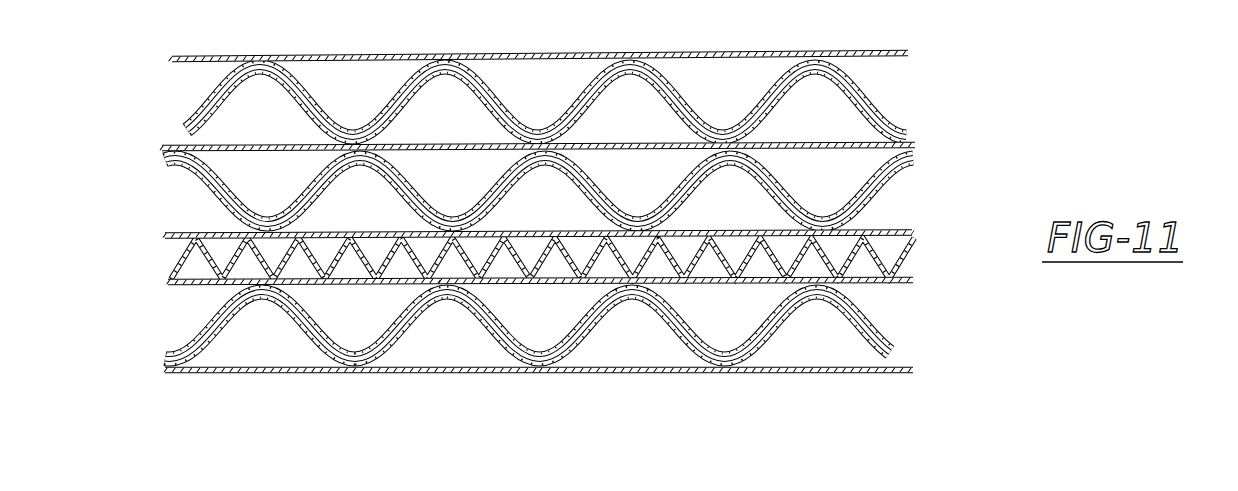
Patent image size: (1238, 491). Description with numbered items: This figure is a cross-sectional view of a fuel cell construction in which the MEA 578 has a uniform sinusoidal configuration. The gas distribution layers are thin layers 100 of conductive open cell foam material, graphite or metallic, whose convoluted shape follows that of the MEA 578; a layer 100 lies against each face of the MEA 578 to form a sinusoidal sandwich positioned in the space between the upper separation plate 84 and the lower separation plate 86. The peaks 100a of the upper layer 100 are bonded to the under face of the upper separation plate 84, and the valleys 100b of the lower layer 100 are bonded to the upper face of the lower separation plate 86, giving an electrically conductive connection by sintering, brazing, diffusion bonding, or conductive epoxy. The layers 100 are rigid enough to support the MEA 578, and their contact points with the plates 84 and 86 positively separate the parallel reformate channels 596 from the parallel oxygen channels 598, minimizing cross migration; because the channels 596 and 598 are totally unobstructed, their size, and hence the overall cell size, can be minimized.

The upper separation plate 84 is at (170, 147).
The lower separation plate 86 is at (172, 233).
The MEA 578 is at (852, 82).
The oxygen channels 598 is at (276, 333).
The reformate channels 596 is at (364, 312).
The layer of conductive open cell foam material 100 is at (522, 304).
The peaks 100a is at (453, 285).
The valleys 100b is at (555, 374).